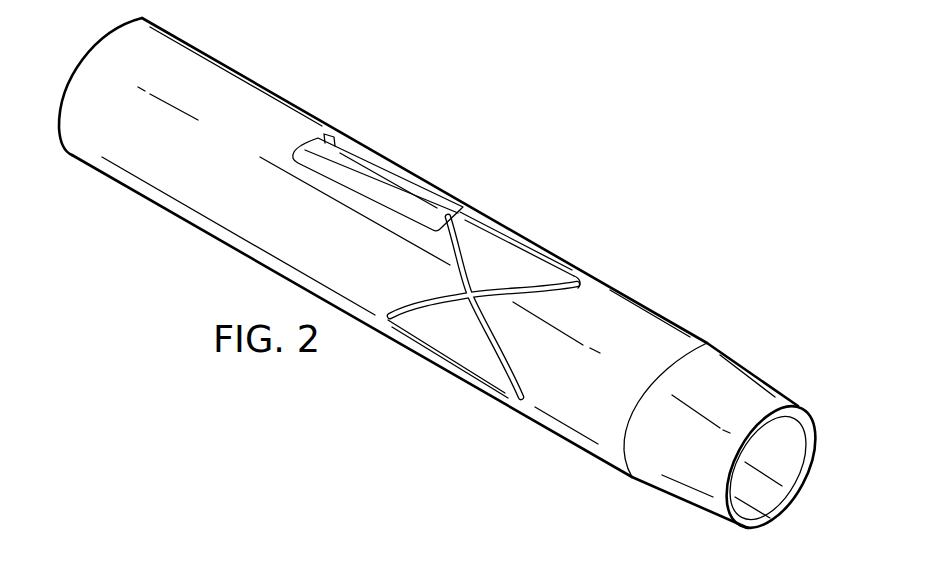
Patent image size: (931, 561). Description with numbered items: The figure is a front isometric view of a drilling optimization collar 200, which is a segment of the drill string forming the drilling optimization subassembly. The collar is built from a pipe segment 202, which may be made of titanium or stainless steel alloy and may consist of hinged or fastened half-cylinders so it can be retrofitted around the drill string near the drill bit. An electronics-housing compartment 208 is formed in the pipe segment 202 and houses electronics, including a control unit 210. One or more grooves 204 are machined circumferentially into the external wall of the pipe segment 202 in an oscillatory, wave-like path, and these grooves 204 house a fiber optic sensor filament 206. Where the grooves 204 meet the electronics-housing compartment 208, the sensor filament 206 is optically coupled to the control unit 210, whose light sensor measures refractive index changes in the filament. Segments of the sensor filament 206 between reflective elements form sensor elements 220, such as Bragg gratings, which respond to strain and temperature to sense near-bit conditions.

The drilling optimization collar 200 is at (540, 136).
The pipe segment 202 is at (226, 65).
The groove 204 is at (604, 282).
The fiber optic sensor filament 206 is at (577, 277).
The electronics-housing compartment 208 is at (292, 152).
The control unit 210 is at (361, 152).
The sensor element 220 is at (471, 216).